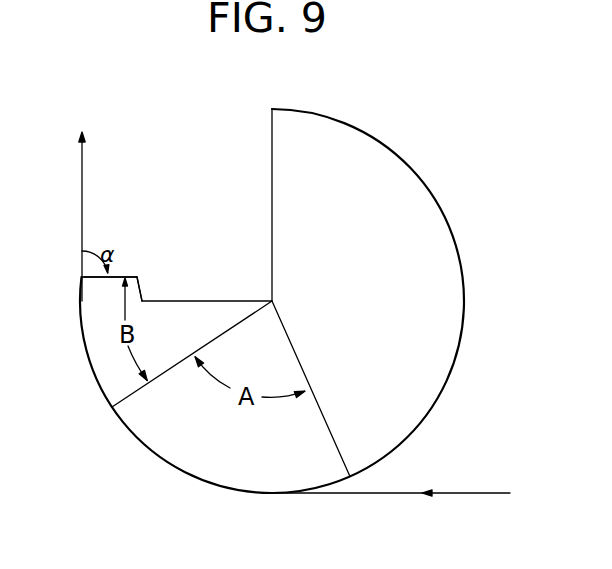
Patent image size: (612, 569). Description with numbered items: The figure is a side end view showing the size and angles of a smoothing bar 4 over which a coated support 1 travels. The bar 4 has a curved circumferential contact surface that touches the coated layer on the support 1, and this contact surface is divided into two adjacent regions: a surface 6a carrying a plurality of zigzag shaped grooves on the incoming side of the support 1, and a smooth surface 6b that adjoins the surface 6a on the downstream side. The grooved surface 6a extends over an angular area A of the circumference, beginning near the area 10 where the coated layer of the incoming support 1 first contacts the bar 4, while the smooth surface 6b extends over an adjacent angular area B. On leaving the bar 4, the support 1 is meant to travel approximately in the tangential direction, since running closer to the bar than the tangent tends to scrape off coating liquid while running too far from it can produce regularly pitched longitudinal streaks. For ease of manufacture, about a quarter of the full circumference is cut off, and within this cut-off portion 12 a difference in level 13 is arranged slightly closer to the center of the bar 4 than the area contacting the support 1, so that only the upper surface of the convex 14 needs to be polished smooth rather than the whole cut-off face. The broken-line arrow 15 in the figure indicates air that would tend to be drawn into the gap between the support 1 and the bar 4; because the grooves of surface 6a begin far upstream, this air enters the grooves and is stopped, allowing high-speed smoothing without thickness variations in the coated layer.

The support 1 is at (470, 494).
The smoothing bar 4 is at (452, 267).
The surface having zigzag shaped grooves 6a is at (266, 488).
The smooth surface 6b is at (103, 355).
The area of incoming support 10 is at (340, 490).
The cut-off portion 12 is at (193, 178).
The difference in level 13 is at (140, 282).
The convex 14 is at (112, 283).
The direction of rotation 15 is at (357, 483).